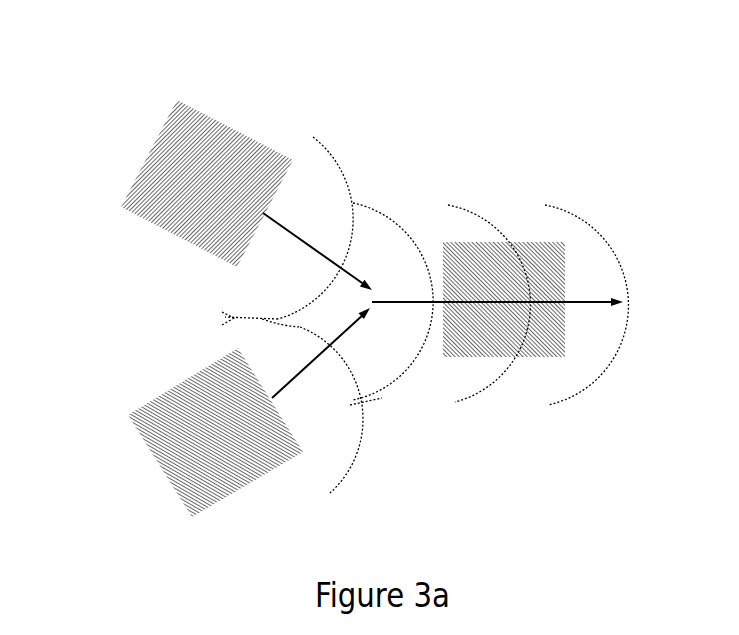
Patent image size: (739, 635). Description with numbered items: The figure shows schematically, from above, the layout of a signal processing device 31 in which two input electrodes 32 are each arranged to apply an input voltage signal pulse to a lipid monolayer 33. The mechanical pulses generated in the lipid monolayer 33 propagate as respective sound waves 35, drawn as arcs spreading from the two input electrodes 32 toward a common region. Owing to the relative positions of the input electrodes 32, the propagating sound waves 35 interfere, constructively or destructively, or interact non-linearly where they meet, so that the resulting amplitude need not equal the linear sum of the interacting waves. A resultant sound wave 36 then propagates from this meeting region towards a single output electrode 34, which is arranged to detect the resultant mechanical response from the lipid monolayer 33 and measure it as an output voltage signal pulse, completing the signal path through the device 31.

The signal processing device 31 is at (417, 138).
The input electrodes 32 is at (155, 160).
The lipid monolayer 33 is at (496, 458).
The output electrode 34 is at (547, 255).
The sound waves 35 is at (333, 158).
The resultant sound wave 36 is at (477, 207).